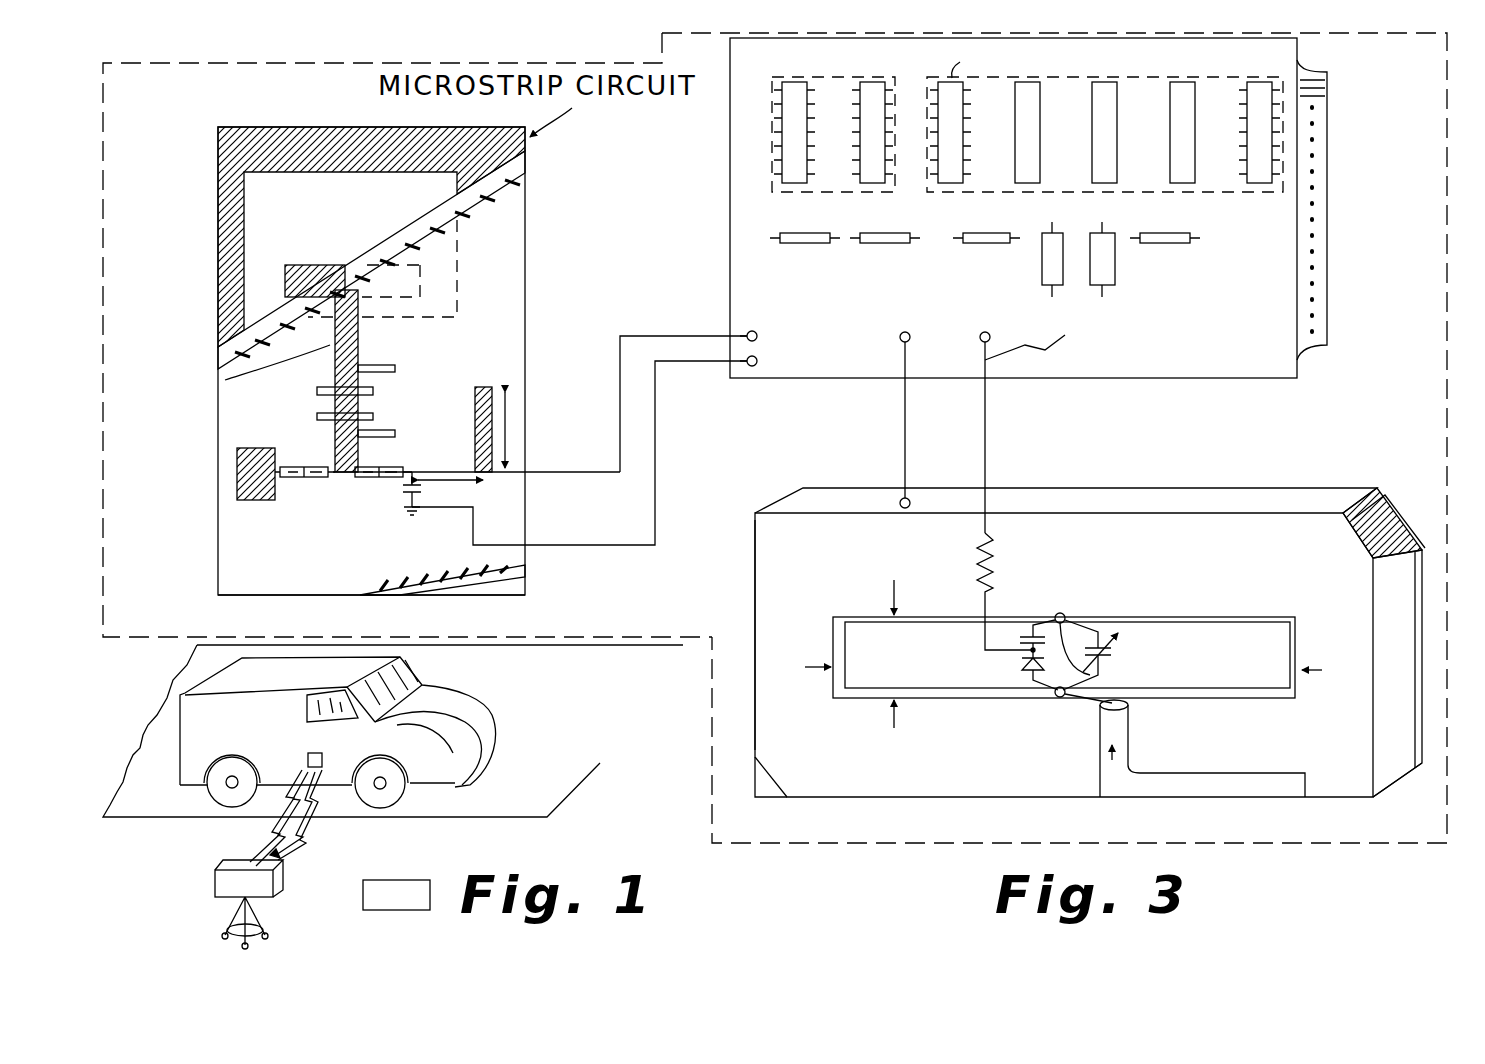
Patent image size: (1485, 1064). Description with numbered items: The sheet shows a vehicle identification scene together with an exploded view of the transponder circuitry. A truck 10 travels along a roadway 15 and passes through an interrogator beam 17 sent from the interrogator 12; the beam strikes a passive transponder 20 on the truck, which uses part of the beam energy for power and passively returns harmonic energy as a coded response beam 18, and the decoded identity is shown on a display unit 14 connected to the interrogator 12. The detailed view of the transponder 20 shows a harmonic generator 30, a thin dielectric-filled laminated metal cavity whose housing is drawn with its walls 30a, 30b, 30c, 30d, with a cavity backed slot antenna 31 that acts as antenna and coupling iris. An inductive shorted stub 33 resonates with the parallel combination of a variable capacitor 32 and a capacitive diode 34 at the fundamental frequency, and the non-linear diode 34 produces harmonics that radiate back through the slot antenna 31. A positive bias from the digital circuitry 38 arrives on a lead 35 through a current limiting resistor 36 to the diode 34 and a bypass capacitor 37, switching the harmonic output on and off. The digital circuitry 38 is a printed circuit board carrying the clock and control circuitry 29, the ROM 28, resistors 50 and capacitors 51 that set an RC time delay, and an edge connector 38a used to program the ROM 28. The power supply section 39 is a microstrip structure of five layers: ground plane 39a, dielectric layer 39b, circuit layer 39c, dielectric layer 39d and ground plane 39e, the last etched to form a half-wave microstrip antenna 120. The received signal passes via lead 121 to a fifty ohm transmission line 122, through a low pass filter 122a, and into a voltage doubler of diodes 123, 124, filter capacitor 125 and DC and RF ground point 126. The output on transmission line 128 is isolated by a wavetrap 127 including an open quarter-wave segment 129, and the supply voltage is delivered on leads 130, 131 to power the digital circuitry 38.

In FIG. 1, the truck 10 is at (422, 690).
In FIG. 1, the interrogator 12 is at (275, 868).
In FIG. 1, the display unit 14 is at (388, 880).
In FIG. 1, the roadway 15 is at (540, 697).
In FIG. 1, the interrogator beam 17 is at (262, 830).
In FIG. 1, the response beam 18 is at (296, 828).
In FIG. 1, the passive transponder 20 is at (308, 756).
In FIG. 3, the passive transponder 20 is at (820, 843).
In FIG. 3, the ROM 28 is at (784, 205).
In FIG. 3, the clock and control circuitry 29 is at (1155, 190).
In FIG. 3, the harmonic generator 30 is at (1165, 497).
In FIG. 3, the housing wall 30a is at (775, 625).
In FIG. 3, the housing bevel 30b is at (1377, 488).
In FIG. 3, the housing side wall 30c is at (1400, 520).
In FIG. 3, the housing bottom edge 30d is at (1405, 770).
In FIG. 3, the cavity backed slot antenna 31 is at (1312, 636).
In FIG. 3, the variable capacitor 32 is at (1095, 668).
In FIG. 3, the inductive stub 33 is at (1130, 733).
In FIG. 3, the capacitive diode 34 is at (1027, 660).
In FIG. 3, the lead 35 is at (988, 472).
In FIG. 3, the current limiting resistor 36 is at (990, 575).
In FIG. 3, the bypass capacitor 37 is at (1040, 620).
In FIG. 3, the digital circuitry 38 is at (1058, 382).
In FIG. 3, the edge connector 38a is at (1340, 207).
In FIG. 1, the power supply section 39 is at (530, 302).
In FIG. 1, the ground plane 39a is at (525, 596).
In FIG. 1, the dielectric layer 39b is at (525, 572).
In FIG. 1, the circuit layer 39c is at (335, 336).
In FIG. 1, the dielectric layer 39d is at (242, 354).
In FIG. 1, the ground plane 39e is at (218, 203).
In FIG. 3, the resistor 50 is at (790, 236).
In FIG. 3, the capacitor 51 is at (1138, 282).
In FIG. 1, the microstrip antenna 120 is at (345, 266).
In FIG. 1, the lead 121 is at (372, 276).
In FIG. 1, the 50 ohm transmission line 122 is at (358, 350).
In FIG. 1, the low pass filter 122a is at (317, 405).
In FIG. 1, the diode 123 is at (290, 480).
In FIG. 1, the diode 124 is at (370, 470).
In FIG. 1, the filter capacitor 125 is at (402, 492).
In FIG. 1, the DC and RF ground point 126 is at (237, 476).
In FIG. 1, the wavetrap 127 is at (488, 492).
In FIG. 1, the transmission line 128 is at (450, 465).
In FIG. 1, the open circuited transmission line segment 129 is at (508, 392).
In FIG. 1, the lead 130 is at (660, 336).
In FIG. 1, the lead 131 is at (656, 434).